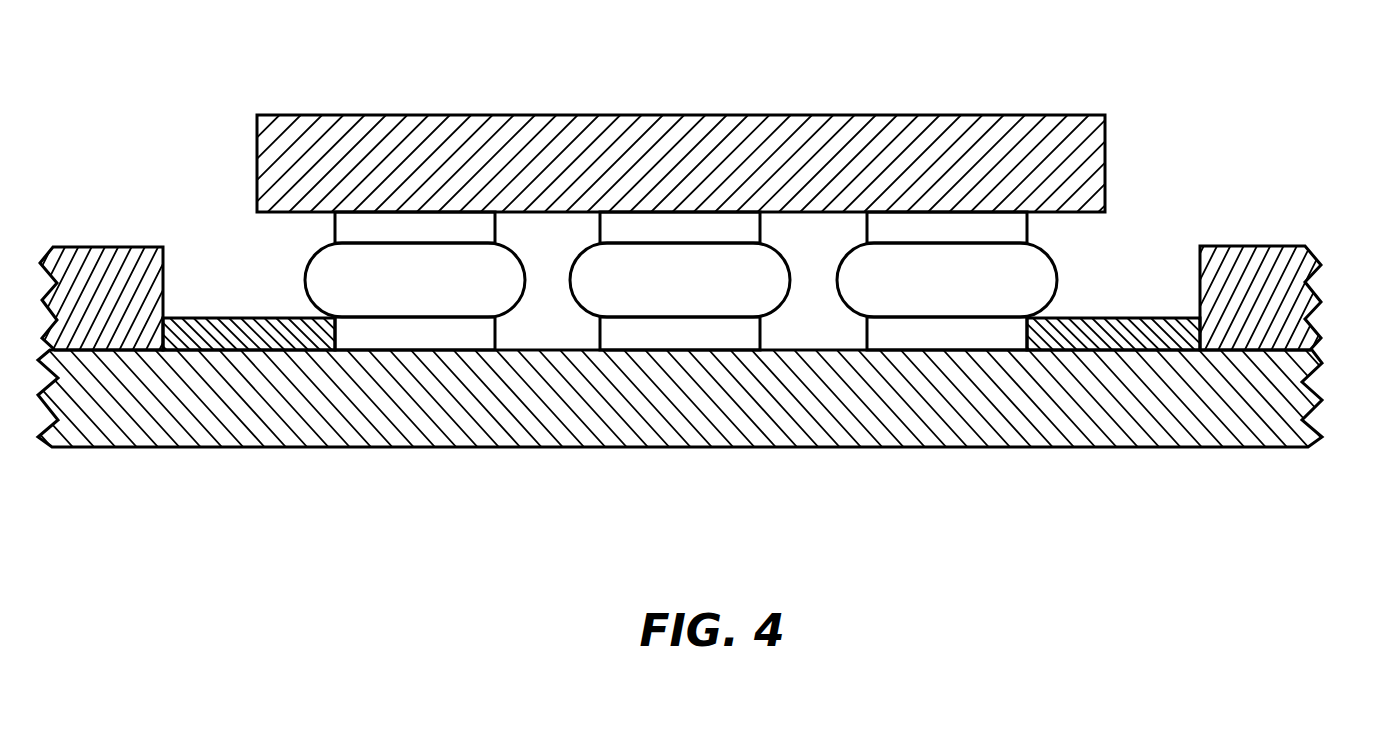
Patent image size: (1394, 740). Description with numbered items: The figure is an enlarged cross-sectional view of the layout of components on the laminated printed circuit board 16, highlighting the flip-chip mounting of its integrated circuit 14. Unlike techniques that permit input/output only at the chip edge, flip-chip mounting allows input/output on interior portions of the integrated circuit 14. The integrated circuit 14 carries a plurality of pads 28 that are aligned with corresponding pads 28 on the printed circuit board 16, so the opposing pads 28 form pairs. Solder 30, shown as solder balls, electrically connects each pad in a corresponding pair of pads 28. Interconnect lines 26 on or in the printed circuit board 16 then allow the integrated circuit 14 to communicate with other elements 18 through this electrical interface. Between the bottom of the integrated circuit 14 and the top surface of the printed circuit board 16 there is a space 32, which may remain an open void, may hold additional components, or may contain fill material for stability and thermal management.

The integrated circuit 14 is at (683, 128).
The laminated printed circuit board 16 is at (1330, 350).
The other elements 18 is at (118, 267).
The lines 26 is at (241, 332).
The pads 28 is at (401, 240).
The solder 30 is at (401, 291).
The space 32 is at (799, 260).